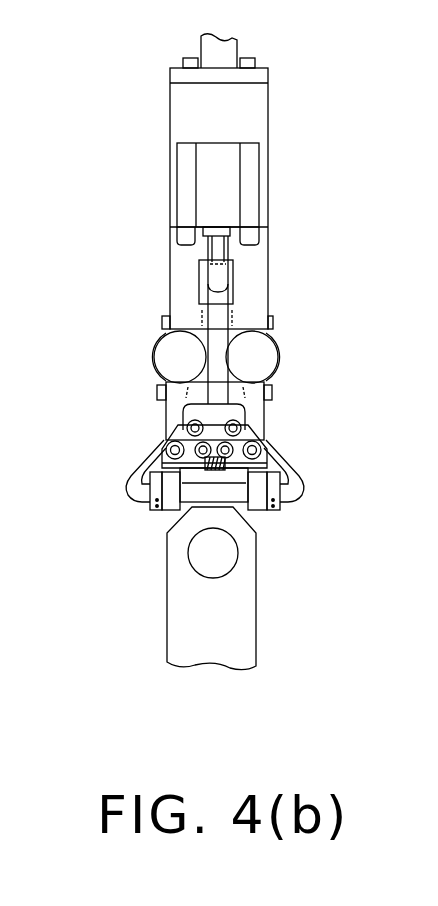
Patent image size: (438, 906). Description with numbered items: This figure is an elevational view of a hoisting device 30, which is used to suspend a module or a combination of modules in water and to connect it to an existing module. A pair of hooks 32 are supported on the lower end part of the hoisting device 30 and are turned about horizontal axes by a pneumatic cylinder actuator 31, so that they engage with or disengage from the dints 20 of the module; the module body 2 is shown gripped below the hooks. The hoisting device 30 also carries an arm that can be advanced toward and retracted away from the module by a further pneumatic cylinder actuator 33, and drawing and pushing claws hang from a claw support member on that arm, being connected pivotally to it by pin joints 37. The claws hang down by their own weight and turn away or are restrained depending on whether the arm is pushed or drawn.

The workpiece 2 is at (248, 622).
The dints 20 is at (254, 523).
The hoisting device 30 is at (268, 119).
The pneumatic cylinder actuator 31 is at (253, 196).
The hooks 32 is at (142, 468).
The pneumatic cylinder actuator 33 is at (165, 353).
The pin joints 37 is at (262, 427).